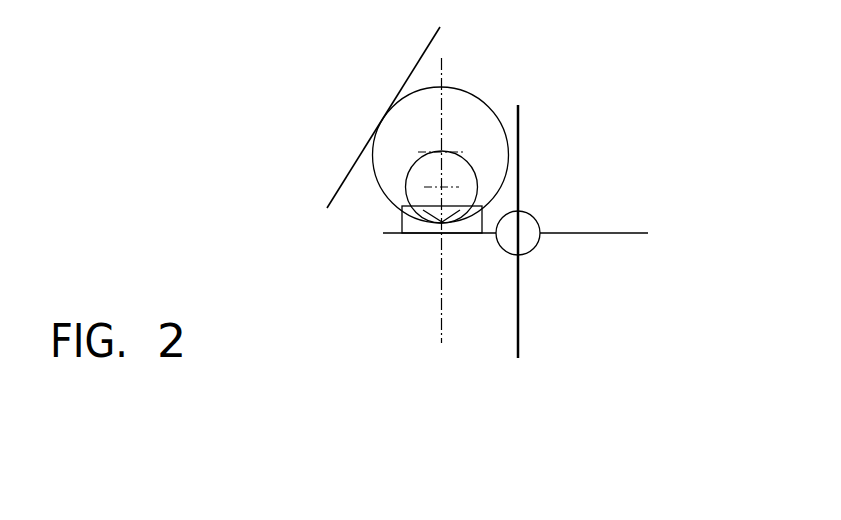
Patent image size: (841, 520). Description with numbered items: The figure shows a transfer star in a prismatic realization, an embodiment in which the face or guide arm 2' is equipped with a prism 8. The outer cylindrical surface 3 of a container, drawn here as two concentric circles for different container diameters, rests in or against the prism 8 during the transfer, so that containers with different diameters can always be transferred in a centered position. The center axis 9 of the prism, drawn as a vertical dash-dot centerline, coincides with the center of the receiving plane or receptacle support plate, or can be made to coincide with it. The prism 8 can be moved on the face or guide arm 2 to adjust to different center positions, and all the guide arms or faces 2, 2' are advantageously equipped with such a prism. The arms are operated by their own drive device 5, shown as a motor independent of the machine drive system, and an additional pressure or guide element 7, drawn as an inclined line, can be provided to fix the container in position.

The pressure or guide element 7 is at (418, 63).
The center axis 9 is at (442, 72).
The outer cylindrical surface 3 is at (508, 152).
The prism 8 is at (391, 235).
The arm 2 is at (398, 275).
The face or guide arm 2' is at (635, 249).
The drive device 5 is at (613, 286).